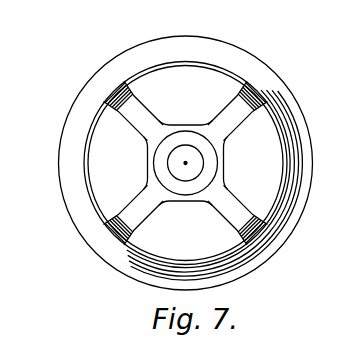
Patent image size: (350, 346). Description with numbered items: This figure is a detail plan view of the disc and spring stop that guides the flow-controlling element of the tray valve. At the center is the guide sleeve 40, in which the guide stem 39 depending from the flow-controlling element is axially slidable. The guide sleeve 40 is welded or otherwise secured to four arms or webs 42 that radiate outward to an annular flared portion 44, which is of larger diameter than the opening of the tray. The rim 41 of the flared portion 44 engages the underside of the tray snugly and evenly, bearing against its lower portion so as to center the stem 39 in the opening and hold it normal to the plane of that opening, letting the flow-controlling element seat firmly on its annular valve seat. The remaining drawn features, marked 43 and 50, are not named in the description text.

The guide stem 39 is at (186, 163).
The guide sleeve 40 is at (189, 129).
The rim 41 is at (275, 74).
The arms or webs 42 is at (220, 118).
The inner ring 43 is at (165, 63).
The annular flared portion 44 is at (184, 36).
The opening 50 is at (100, 141).